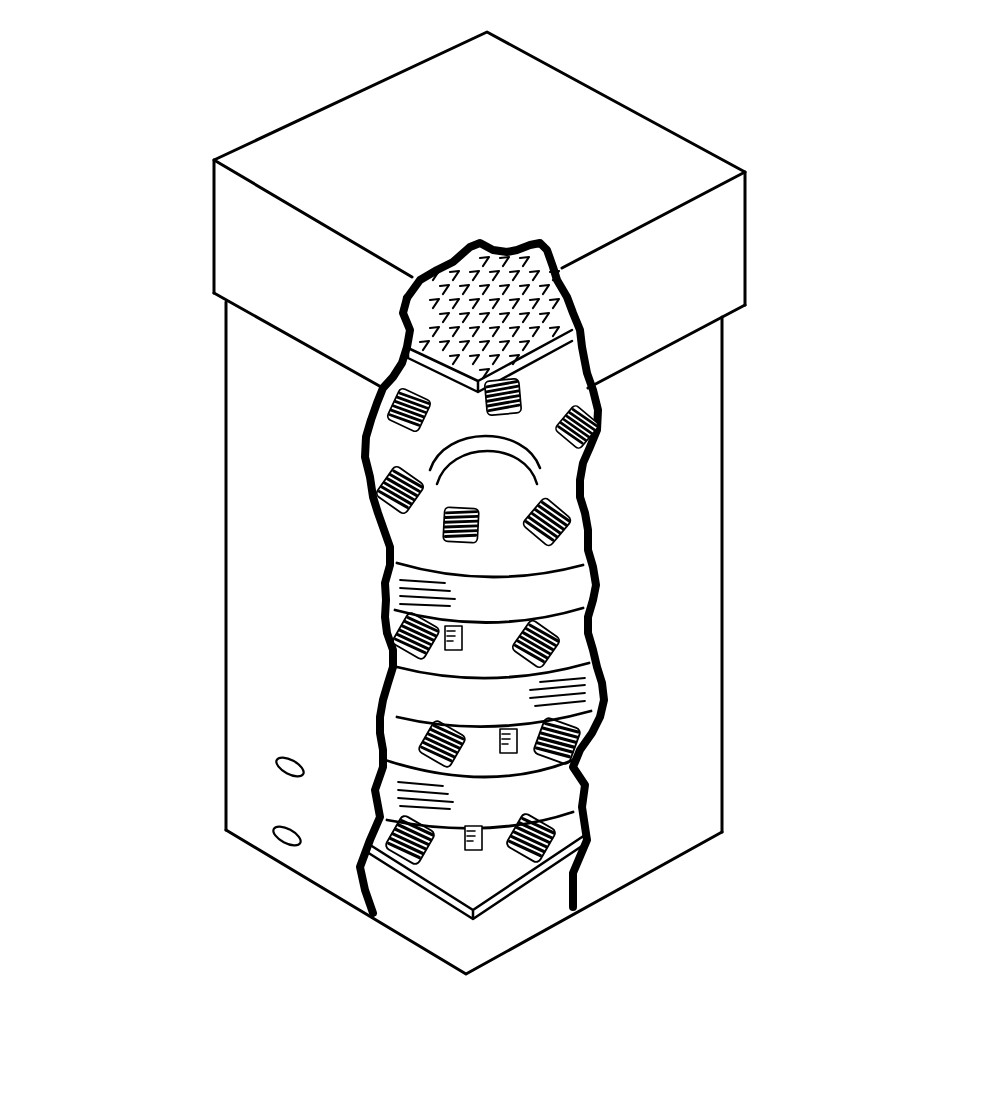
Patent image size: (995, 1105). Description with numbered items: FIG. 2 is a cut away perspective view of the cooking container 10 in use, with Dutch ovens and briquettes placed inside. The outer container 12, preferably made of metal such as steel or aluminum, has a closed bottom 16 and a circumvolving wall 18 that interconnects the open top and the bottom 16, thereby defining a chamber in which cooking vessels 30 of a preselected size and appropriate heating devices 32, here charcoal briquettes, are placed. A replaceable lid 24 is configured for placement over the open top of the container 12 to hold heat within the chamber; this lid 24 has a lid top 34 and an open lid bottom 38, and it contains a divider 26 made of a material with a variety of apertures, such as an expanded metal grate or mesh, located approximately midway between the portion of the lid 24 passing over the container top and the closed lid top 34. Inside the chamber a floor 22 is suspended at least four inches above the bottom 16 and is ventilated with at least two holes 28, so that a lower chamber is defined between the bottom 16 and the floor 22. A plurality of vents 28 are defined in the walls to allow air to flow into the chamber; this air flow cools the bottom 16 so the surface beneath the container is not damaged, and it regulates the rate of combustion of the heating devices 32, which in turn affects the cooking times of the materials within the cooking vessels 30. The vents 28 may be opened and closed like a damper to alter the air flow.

The container 10 is at (165, 492).
The outer container 12 is at (753, 585).
The closed bottom 16 is at (607, 897).
The circumvolving wall 18 is at (662, 667).
The floor 22 is at (460, 873).
The replaceable lid 24 is at (705, 217).
The divider 26 is at (487, 345).
The vents 28 is at (282, 777).
The cooking vessels 30 is at (388, 766).
The heating devices 32 is at (590, 823).
The lid top 34 is at (468, 105).
The open lid bottom 38 is at (245, 310).